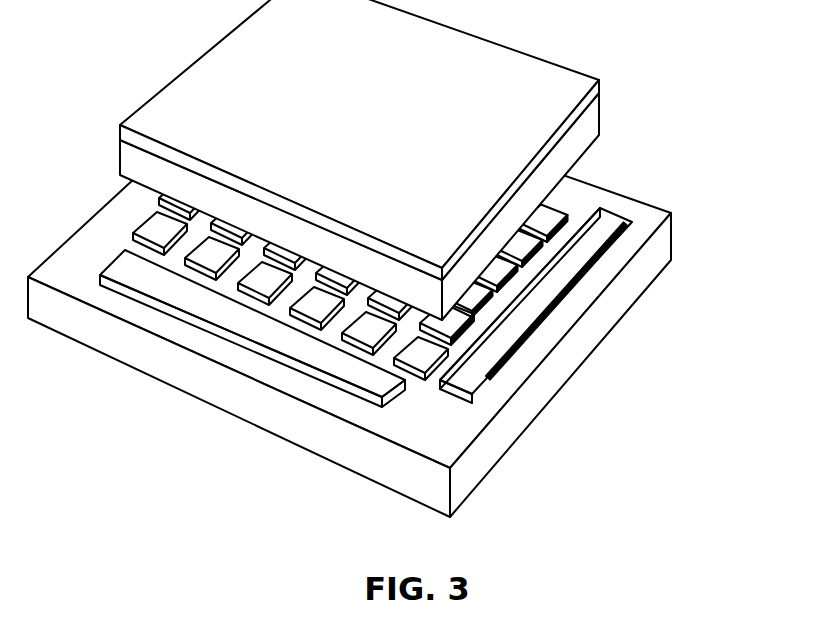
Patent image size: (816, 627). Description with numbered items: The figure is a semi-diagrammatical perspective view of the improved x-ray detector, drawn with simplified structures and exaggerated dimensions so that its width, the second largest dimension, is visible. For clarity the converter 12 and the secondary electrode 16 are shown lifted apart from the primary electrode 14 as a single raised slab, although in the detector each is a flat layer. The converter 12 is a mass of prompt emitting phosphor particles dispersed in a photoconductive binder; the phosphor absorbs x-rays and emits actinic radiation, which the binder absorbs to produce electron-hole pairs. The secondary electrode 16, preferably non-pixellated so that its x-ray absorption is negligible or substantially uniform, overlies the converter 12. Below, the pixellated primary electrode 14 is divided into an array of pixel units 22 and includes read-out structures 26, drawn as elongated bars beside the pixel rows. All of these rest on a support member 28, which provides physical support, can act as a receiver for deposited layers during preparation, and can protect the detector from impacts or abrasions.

The converter 12 is at (591, 122).
The primary electrode 14 is at (592, 288).
The secondary electrode 16 is at (599, 81).
The pixel units 22 is at (253, 280).
The read-out structures 26 is at (406, 391).
The support member 28 is at (557, 365).